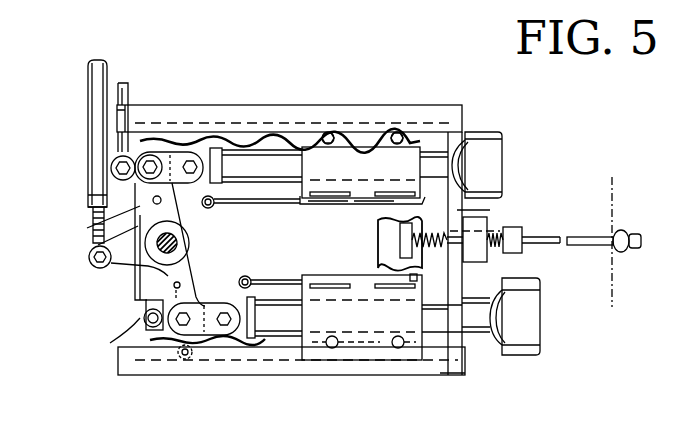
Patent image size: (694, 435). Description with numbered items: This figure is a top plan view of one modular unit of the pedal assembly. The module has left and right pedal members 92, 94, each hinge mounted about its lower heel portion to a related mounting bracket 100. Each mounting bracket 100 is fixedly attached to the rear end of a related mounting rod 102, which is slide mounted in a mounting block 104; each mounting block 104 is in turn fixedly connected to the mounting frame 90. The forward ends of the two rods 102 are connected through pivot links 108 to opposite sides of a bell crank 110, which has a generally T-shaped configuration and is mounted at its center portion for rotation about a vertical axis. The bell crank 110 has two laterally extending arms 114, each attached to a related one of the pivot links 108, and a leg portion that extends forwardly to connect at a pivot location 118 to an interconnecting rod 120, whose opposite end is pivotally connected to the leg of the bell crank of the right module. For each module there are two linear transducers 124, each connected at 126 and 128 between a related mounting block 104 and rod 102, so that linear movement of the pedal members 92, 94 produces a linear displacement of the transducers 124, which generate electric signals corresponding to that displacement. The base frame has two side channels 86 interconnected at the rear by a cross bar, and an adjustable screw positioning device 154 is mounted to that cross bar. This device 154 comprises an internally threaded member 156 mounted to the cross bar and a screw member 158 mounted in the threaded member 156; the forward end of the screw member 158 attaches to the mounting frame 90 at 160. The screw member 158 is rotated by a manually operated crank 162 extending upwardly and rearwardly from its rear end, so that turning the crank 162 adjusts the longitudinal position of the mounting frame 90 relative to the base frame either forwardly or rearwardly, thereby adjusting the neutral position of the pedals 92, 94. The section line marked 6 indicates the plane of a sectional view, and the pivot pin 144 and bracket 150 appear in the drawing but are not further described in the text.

The section line 6- 6 is at (47, 252).
The side channel 86 is at (346, 105).
The mounting frame 90 is at (207, 345).
The left pedal member 92 is at (513, 320).
The right pedal member 94 is at (485, 155).
The mounting bracket 100 is at (487, 125).
The mounting rod 102 is at (235, 160).
The mounting block 104 is at (318, 163).
The pivot link 108 is at (172, 160).
The bell crank 110 is at (168, 277).
The laterally extending arm 114 is at (140, 206).
The pivot location 118 is at (100, 268).
The interconnecting rod 120 is at (88, 162).
The linear transducer 124 is at (338, 275).
The transducer connection 126 is at (252, 282).
The transducer connection 128 is at (417, 277).
The pivot pin 144 is at (152, 332).
The bracket 150 is at (490, 210).
The adjustable screw positioning device 154 is at (554, 195).
The internally threaded member 156 is at (480, 224).
The screw member 158 is at (447, 238).
The screw attachment 160 is at (400, 229).
The manually operated crank 162 is at (590, 236).